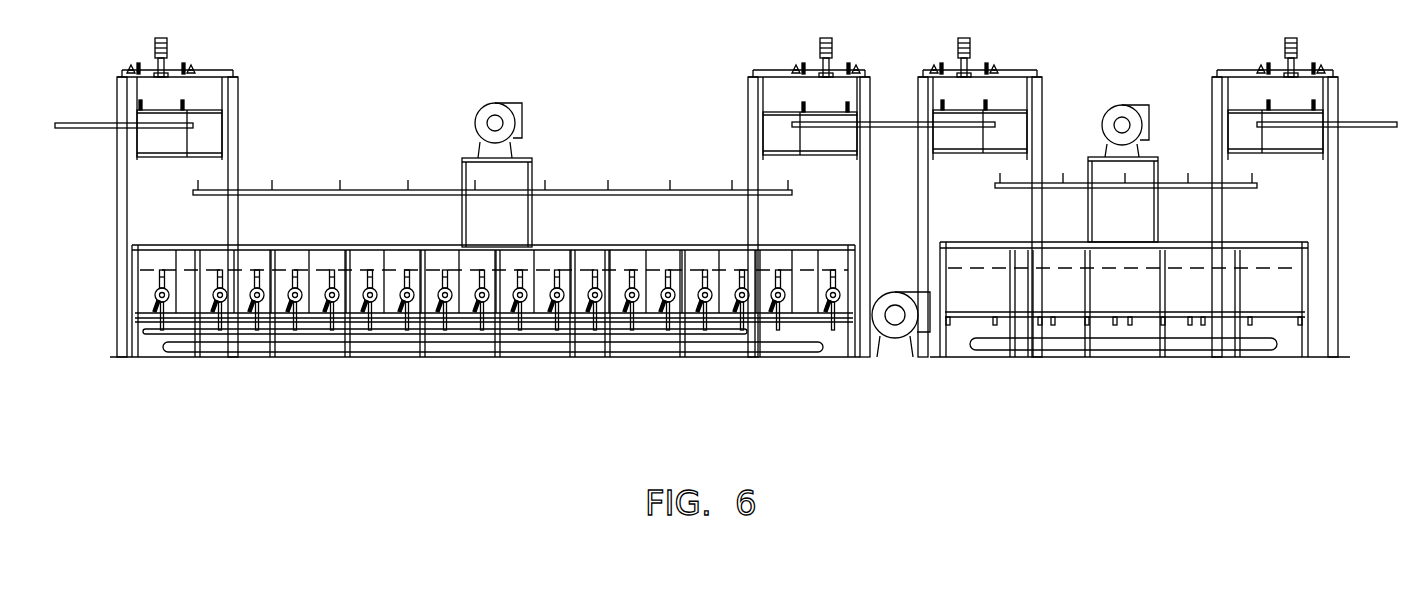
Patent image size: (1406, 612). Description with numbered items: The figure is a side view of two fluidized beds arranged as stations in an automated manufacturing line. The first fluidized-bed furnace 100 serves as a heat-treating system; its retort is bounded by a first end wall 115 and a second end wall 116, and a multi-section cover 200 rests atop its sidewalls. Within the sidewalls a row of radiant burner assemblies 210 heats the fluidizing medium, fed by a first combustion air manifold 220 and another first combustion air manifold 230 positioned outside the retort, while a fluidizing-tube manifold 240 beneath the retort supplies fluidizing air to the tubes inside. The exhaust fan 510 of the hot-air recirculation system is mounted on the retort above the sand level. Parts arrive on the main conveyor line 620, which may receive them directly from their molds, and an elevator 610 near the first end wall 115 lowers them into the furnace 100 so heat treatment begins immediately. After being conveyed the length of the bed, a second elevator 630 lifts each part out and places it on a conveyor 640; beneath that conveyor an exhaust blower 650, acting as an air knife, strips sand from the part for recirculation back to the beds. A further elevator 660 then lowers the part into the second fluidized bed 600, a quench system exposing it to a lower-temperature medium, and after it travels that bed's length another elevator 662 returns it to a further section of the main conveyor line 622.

The fluidized-bed furnace 100 is at (688, 300).
The first end wall 115 is at (117, 212).
The second end wall 116 is at (872, 187).
The cover 200 is at (372, 190).
The radiant burner assemblies 210 is at (635, 308).
The first combustion air manifold 220 is at (320, 334).
The first combustion air manifold 230 is at (350, 328).
The fluidizing-tube manifold 240 is at (800, 352).
The exhaust fan 510 is at (520, 120).
The second fluidized bed 600 is at (1143, 295).
The elevator 610 is at (170, 60).
The main conveyor line 620 is at (78, 122).
The main conveyor line section 622 is at (1378, 122).
The second elevator 630 is at (822, 62).
The conveyor 640 is at (893, 120).
The exhaust blower 650 is at (898, 340).
The elevator 660 is at (1007, 88).
The elevator 662 is at (1245, 88).